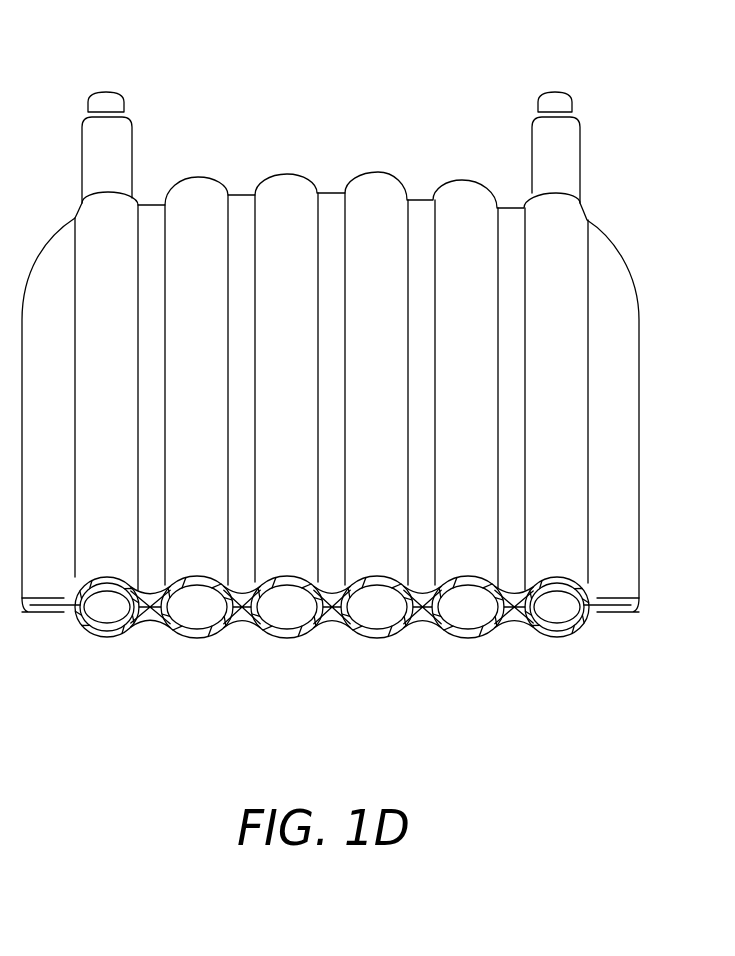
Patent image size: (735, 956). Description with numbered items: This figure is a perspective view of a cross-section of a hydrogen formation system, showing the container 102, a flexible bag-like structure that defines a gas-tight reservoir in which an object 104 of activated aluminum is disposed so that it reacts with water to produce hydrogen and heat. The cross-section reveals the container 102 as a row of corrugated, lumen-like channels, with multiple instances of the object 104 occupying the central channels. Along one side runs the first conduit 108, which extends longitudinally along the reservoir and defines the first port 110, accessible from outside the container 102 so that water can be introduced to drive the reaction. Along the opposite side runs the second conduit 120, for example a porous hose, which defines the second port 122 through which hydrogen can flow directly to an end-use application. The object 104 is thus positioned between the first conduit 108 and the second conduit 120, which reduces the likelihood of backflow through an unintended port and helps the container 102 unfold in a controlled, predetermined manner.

The container 102 is at (617, 390).
The object 104 is at (287, 610).
The first conduit 108 is at (570, 153).
The first port 110 is at (556, 102).
The second conduit 120 is at (120, 153).
The second port 122 is at (107, 102).